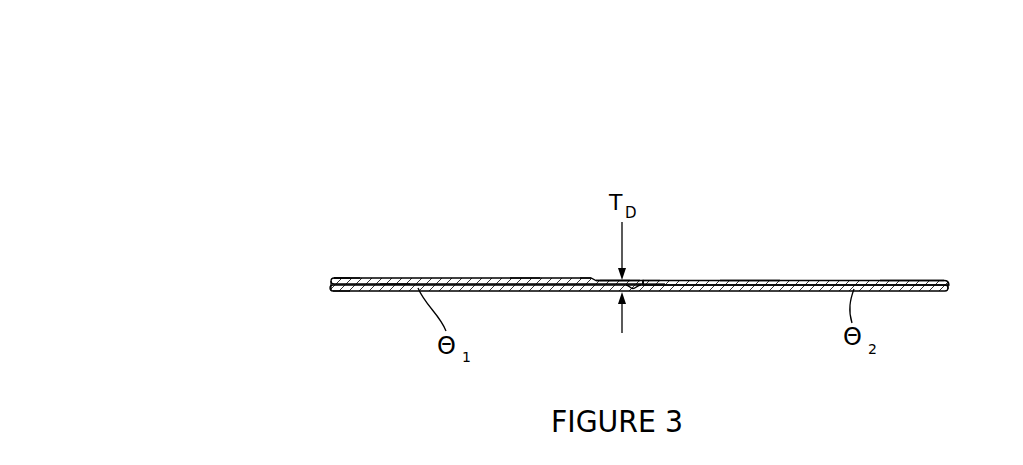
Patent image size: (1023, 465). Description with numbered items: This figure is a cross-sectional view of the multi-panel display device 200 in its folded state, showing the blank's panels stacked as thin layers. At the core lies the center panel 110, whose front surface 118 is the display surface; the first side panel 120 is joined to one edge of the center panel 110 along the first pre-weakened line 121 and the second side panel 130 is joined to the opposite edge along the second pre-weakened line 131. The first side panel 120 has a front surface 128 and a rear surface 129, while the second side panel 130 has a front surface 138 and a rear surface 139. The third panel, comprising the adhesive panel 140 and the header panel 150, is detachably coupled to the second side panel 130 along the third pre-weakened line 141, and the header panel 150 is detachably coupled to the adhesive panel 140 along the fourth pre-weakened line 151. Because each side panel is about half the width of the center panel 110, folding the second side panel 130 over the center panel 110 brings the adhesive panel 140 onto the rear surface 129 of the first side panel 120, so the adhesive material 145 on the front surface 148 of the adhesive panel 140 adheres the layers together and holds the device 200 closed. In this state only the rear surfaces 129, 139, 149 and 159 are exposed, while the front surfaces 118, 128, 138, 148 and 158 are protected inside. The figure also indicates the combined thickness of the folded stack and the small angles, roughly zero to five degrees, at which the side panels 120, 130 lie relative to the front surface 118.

The multi-panel display device 200 is at (377, 102).
The center panel 110 is at (398, 289).
The front surface of the center panel 118 is at (633, 287).
The first side panel 120 is at (333, 279).
The first pre-weakened line 121 is at (330, 285).
The front surface of the first side panel 128 is at (335, 291).
The rear surface of the first side panel 129 is at (342, 278).
The second side panel 130 is at (820, 280).
The second pre-weakened line 131 is at (950, 286).
The front surface of the second side panel 138 is at (748, 279).
The rear surface of the second side panel 139 is at (892, 280).
The adhesive panel 140 is at (603, 280).
The third pre-weakened line 141 is at (644, 281).
The adhesive material 145 is at (612, 280).
The front surface of the adhesive panel 148 is at (646, 284).
The rear surface of the adhesive panel 149 is at (646, 278).
The header panel 150 is at (466, 278).
The fourth pre-weakened line 151 is at (594, 277).
The front surface of the header panel 158 is at (393, 283).
The rear surface of the header panel 159 is at (524, 278).